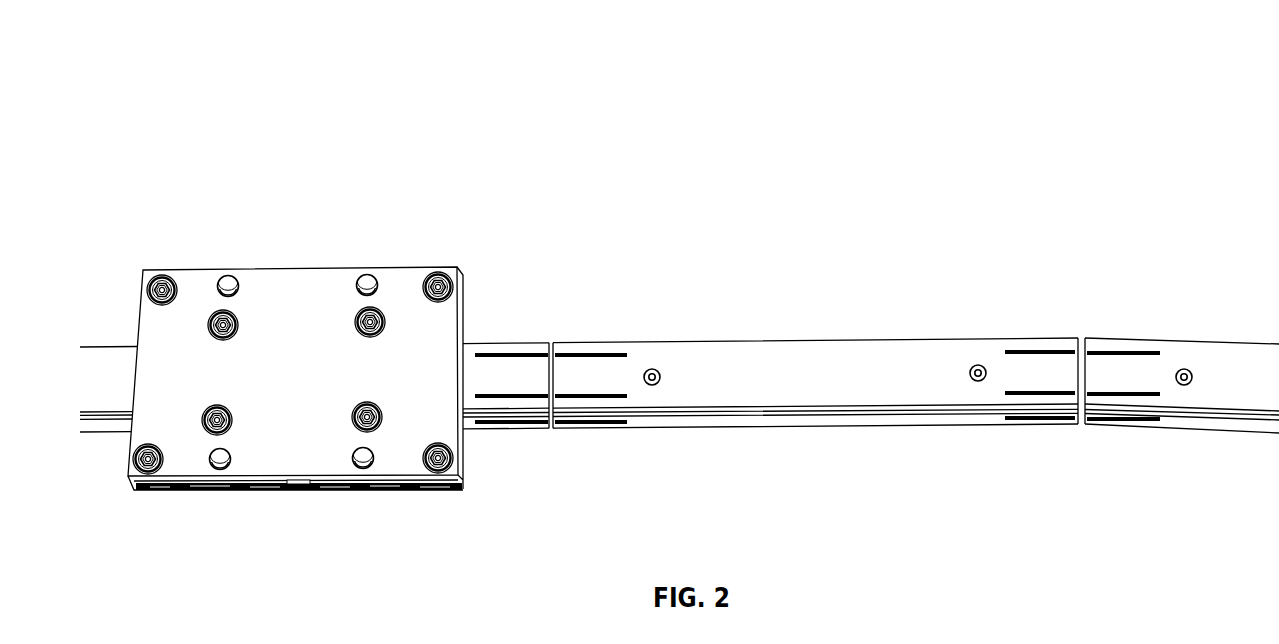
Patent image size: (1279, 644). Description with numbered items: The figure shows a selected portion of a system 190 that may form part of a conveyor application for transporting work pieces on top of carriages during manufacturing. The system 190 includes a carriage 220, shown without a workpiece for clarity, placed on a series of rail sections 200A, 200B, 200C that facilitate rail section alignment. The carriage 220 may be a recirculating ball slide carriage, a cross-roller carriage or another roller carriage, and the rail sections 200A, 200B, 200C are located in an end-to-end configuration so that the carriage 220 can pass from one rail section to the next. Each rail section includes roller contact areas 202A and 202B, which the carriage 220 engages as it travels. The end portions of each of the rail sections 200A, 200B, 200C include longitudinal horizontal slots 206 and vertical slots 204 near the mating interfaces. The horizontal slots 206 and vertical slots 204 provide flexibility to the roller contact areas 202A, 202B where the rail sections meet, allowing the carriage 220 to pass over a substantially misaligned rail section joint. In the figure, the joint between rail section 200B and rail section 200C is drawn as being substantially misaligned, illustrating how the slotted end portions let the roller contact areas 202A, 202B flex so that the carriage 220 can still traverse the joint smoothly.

The system 190 is at (235, 88).
The rail section 200A is at (127, 389).
The rail section 200B is at (815, 389).
The rail section 200C is at (1262, 386).
The roller contact area 202A is at (739, 326).
The roller contact area 202B is at (700, 424).
The vertical slots 204 is at (575, 393).
The longitudinal horizontal slots 206 is at (593, 424).
The carriage 220 is at (318, 387).